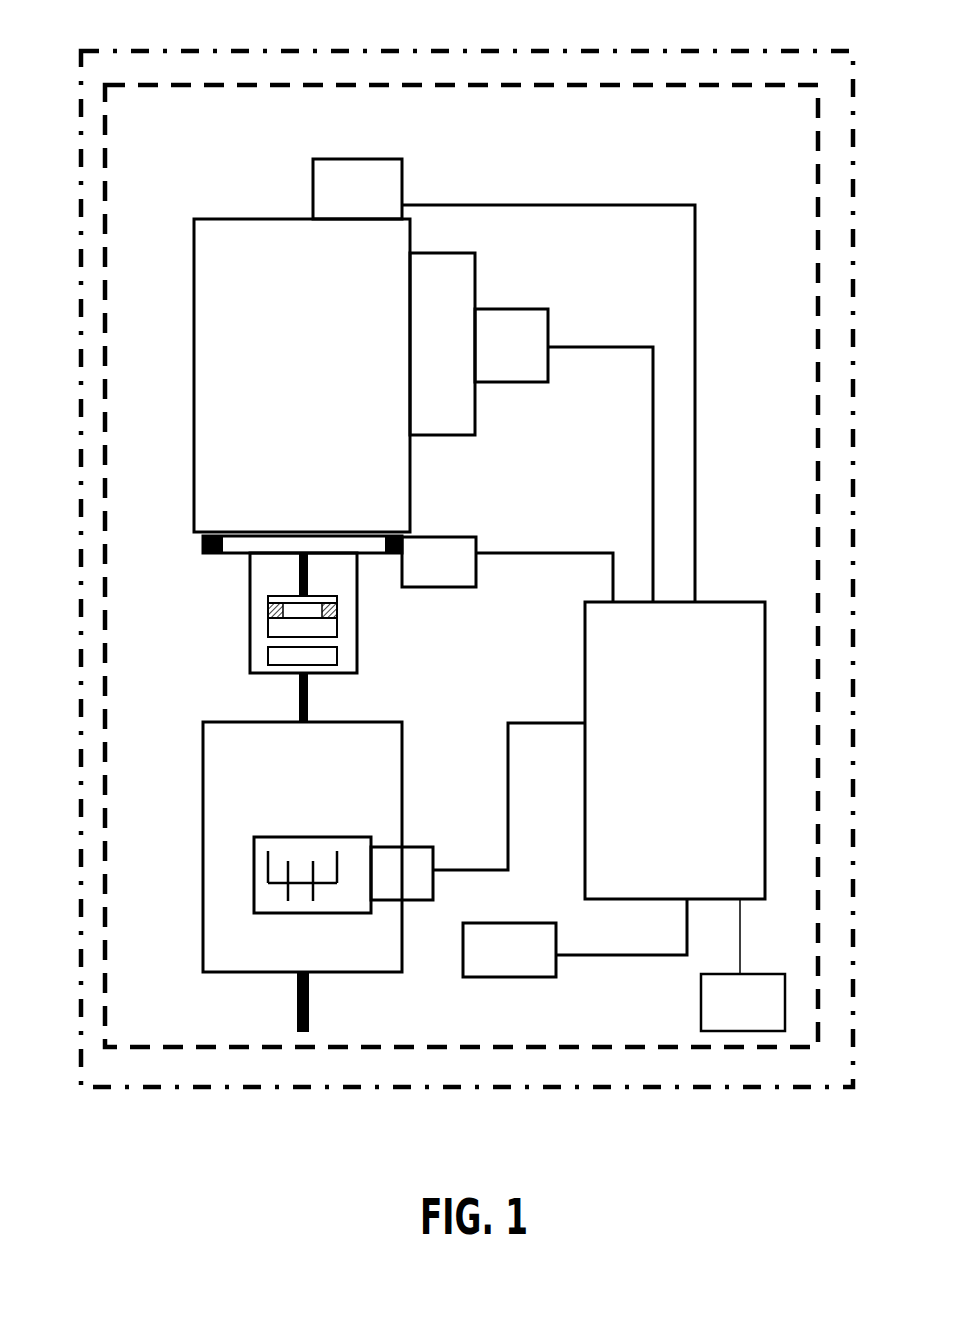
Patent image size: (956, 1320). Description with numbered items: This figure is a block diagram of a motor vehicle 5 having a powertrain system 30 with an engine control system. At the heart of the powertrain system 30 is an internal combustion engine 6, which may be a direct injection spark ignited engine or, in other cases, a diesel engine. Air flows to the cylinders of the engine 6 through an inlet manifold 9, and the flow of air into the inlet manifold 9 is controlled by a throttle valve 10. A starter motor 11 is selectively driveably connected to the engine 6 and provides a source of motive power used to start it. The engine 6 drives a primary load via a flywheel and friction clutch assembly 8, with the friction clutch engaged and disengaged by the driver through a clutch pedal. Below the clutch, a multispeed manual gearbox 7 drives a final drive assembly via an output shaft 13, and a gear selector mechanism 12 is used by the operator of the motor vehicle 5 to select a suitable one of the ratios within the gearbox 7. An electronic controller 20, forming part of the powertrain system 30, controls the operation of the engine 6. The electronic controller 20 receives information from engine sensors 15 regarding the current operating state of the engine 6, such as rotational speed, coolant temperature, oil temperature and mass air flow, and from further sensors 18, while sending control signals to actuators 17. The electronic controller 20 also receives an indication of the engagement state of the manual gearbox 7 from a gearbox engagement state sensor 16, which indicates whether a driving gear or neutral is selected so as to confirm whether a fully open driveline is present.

The motor vehicle 5 is at (168, 49).
The powertrain system 30 is at (313, 80).
The internal combustion engine 6 is at (311, 357).
The multispeed manual gearbox 7 is at (312, 813).
The flywheel and friction clutch assembly 8 is at (250, 619).
The inlet manifold 9 is at (451, 350).
The throttle valve 10 is at (527, 353).
The starter motor 11 is at (456, 579).
The gear selector mechanism 12 is at (254, 870).
The output shaft 13 is at (297, 1005).
The engine sensors 15 is at (374, 202).
The gearbox engagement state sensor 16 is at (417, 887).
The actuators 17 is at (758, 1014).
The sensors 18 is at (514, 967).
The electronic controller 20 is at (692, 755).